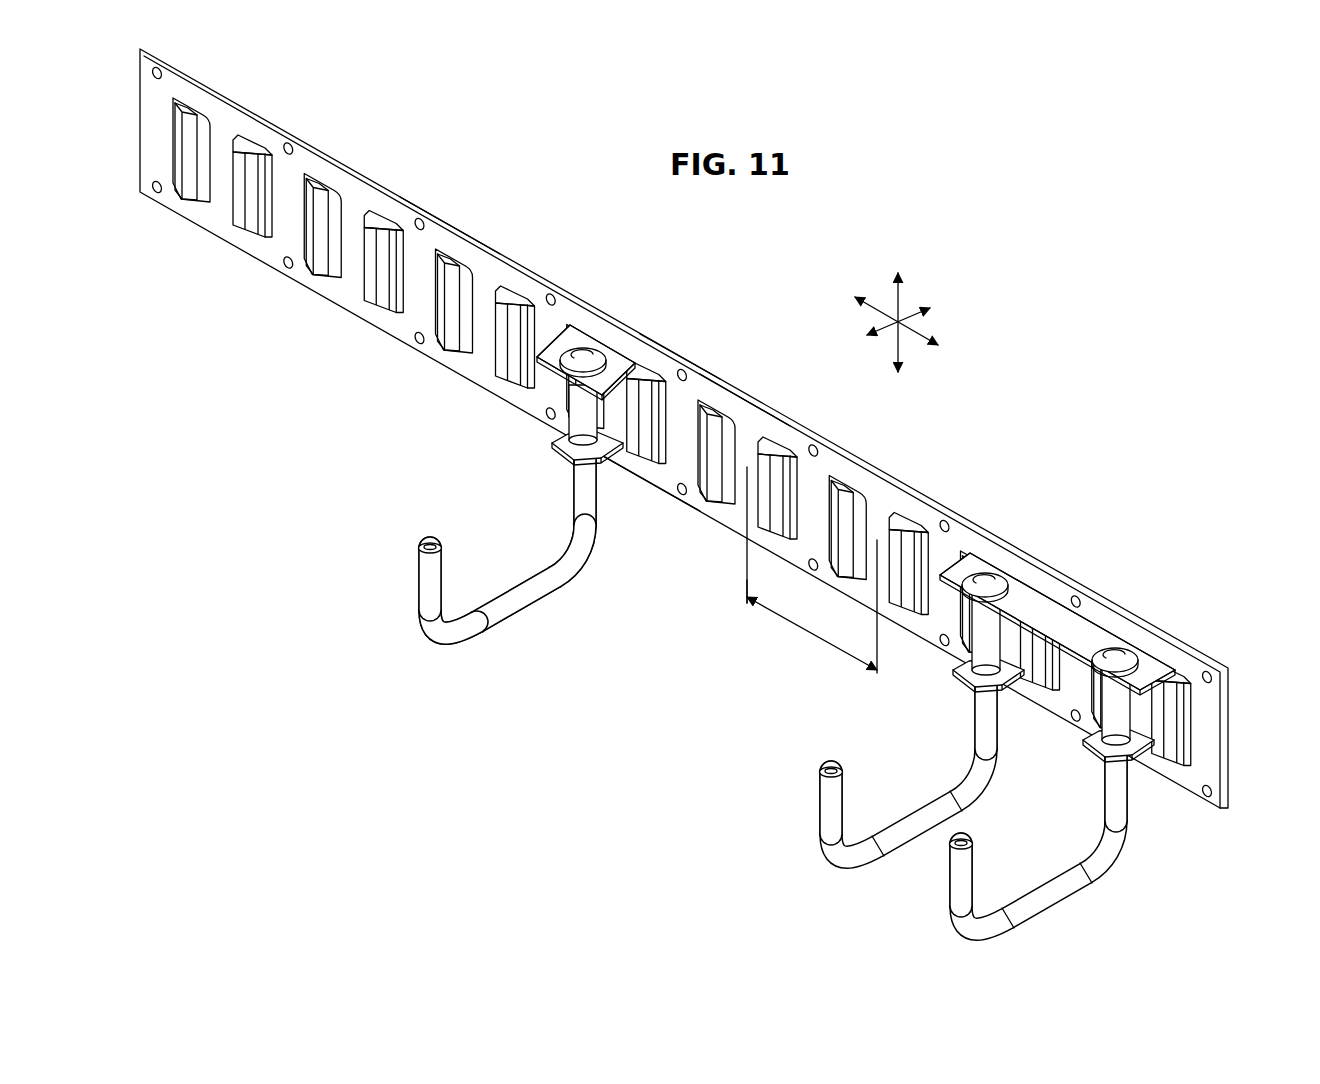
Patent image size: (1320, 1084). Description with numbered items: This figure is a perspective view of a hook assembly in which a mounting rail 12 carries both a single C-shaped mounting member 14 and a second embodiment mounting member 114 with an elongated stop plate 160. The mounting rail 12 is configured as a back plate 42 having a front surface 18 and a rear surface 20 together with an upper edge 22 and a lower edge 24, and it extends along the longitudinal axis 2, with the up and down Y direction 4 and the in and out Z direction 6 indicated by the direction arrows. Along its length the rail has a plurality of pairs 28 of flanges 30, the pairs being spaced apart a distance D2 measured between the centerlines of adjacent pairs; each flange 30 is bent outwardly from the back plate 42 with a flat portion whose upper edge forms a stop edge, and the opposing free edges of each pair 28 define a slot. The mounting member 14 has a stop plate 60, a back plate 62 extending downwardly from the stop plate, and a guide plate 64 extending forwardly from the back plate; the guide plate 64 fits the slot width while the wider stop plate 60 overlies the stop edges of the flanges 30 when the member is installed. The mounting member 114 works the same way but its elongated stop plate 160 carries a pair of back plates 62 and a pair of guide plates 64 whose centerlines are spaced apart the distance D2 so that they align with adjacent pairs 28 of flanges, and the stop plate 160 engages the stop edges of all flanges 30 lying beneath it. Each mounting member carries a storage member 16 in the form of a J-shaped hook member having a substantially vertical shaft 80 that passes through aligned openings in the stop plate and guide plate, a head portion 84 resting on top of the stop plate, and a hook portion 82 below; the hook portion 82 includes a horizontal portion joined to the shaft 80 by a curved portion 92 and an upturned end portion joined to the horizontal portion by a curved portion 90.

The mounting rail 12 is at (684, 428).
The mounting member 14 is at (620, 368).
The storage member 16 is at (568, 600).
The front surface 18 is at (792, 570).
The rear surface 20 is at (742, 396).
The upper edge 22 is at (690, 361).
The lower edge 24 is at (641, 489).
The pair of flanges 28 is at (488, 247).
The flange 30 is at (490, 380).
The back plate 42 is at (878, 502).
The stop plate 60 is at (567, 325).
The back plate 62 is at (606, 412).
The guide plate 64 is at (552, 443).
The shaft 80 is at (575, 487).
The hook portion 82 is at (423, 617).
The head portion 84 is at (585, 355).
The curved portion 90 is at (449, 640).
The curved portion 92 is at (577, 562).
The mounting member 114 is at (1077, 623).
The elongated stop plate 160 is at (1030, 612).
The distance D2 is at (802, 627).
The longitudinal axis 2 is at (920, 338).
The Y direction 4 is at (900, 298).
The Z direction 6 is at (920, 318).